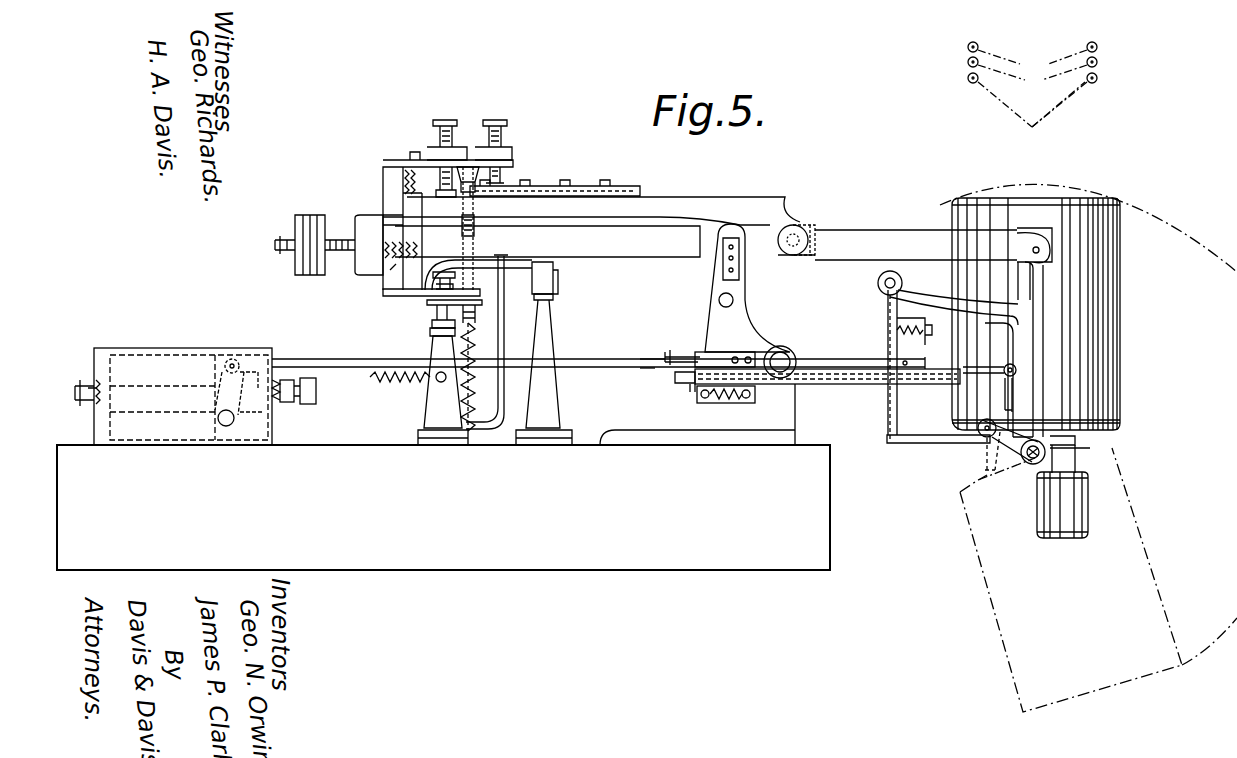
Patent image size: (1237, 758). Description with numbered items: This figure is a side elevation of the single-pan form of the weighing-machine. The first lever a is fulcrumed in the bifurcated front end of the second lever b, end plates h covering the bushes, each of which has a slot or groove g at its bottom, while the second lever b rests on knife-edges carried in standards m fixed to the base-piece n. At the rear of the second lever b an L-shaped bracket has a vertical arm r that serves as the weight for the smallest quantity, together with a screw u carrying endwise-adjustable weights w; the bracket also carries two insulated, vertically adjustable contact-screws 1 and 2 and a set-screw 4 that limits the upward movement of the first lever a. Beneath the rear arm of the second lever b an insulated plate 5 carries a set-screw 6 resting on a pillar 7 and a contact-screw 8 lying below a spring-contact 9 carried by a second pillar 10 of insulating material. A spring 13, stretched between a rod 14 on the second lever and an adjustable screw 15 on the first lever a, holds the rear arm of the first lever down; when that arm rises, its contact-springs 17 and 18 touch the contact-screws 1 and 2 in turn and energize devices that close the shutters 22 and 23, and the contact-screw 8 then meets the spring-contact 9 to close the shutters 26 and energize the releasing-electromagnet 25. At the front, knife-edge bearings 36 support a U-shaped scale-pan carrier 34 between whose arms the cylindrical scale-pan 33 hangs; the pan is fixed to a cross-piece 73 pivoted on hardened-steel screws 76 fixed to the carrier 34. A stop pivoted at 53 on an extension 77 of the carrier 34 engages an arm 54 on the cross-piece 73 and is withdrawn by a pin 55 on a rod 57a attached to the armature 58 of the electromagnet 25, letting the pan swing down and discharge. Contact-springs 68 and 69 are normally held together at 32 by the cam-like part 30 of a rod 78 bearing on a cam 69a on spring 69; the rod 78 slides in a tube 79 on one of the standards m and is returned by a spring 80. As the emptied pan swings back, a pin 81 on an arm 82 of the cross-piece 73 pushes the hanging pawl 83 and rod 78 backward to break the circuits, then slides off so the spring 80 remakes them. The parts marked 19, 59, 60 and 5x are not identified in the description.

The contact-screw 1 is at (436, 123).
The contact-screw 2 is at (508, 128).
The set-screw stop 4 is at (400, 190).
The insulated plate 5 is at (418, 296).
The set-screw 6 is at (436, 306).
The pillar 7 is at (443, 386).
The contact-screw 8 is at (484, 312).
The spring-contact 9 is at (520, 280).
The second pillar 10 is at (545, 395).
The spring 13 is at (478, 385).
The rod 14 is at (500, 333).
The adjustable screw 15 is at (475, 228).
The contact-spring 17 is at (450, 197).
The contact-spring 18 is at (505, 180).
The rack bar 19 is at (548, 198).
The shutter 22 is at (1065, 50).
The shutter 23 is at (1000, 78).
The releasing-electromagnet 25 is at (173, 396).
The shutters 26 is at (1068, 100).
The cam-like part 30 is at (690, 386).
The contact point of springs 32 is at (646, 349).
The scale-pan 33 is at (1120, 325).
The scale-pan carrier 34 is at (1043, 360).
The knife-edge bearings 36 is at (1038, 247).
The pivot 53 is at (877, 282).
The arm 54 is at (930, 445).
The pin 55 is at (905, 362).
The rod 57a is at (640, 360).
The armature 58 is at (294, 403).
The spring 59 is at (400, 383).
The spring 60 is at (925, 340).
The contact-spring 68 is at (672, 352).
The contact-spring 69 is at (745, 345).
The cam 69a is at (665, 374).
The cross-piece 73 is at (1090, 448).
The hardened-steel screws 76 is at (1066, 542).
The extension 77 is at (1000, 332).
The rod 78 is at (998, 366).
The tube 79 is at (845, 386).
The spring 80 is at (728, 405).
The pin 81 is at (982, 455).
The arm 82 is at (1025, 460).
The hanging pawl 83 is at (1005, 400).
The first lever a is at (700, 227).
The second lever b is at (547, 241).
The slot or groove g is at (720, 270).
The end plates h is at (808, 225).
The standards m is at (731, 323).
The base-piece n is at (443, 507).
The vertical arm of bracket r is at (389, 275).
The screw u is at (354, 245).
The adjustable weights w is at (305, 275).
The frame 5x is at (900, 400).